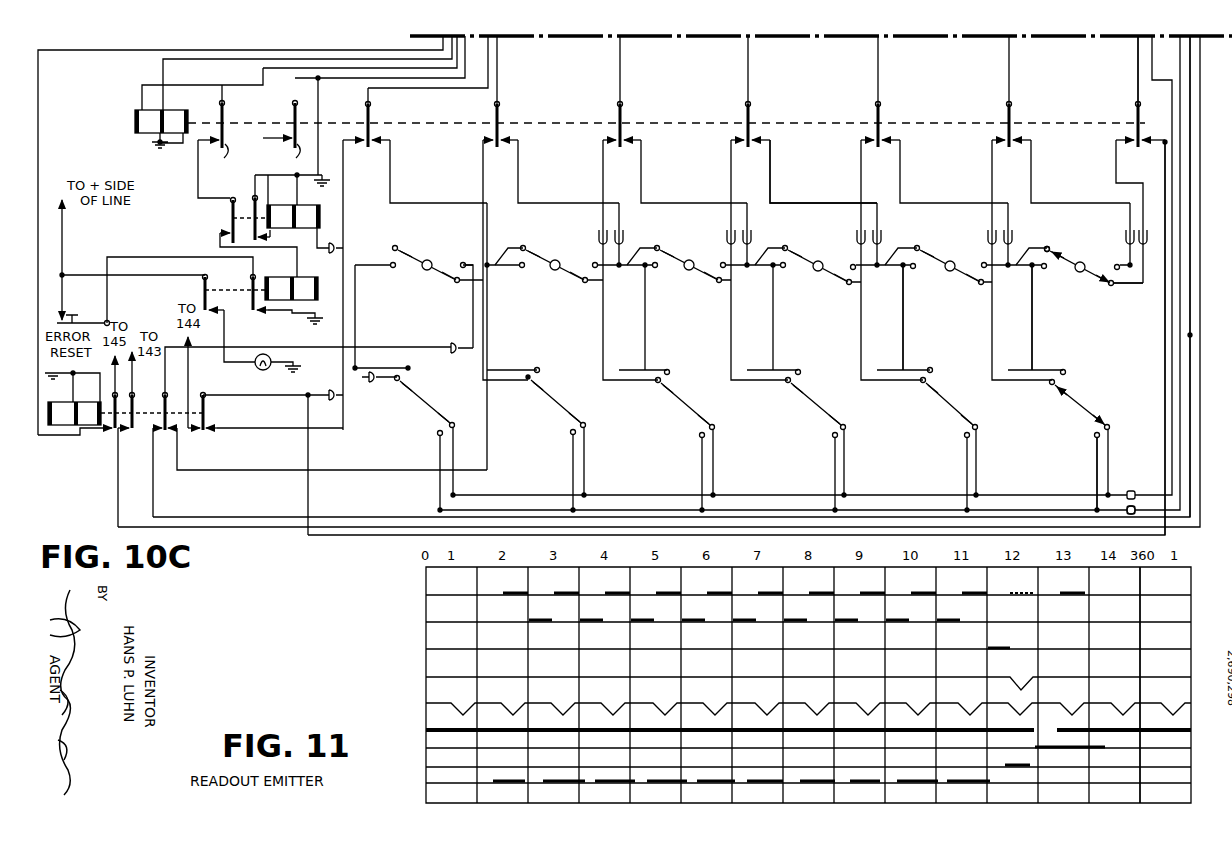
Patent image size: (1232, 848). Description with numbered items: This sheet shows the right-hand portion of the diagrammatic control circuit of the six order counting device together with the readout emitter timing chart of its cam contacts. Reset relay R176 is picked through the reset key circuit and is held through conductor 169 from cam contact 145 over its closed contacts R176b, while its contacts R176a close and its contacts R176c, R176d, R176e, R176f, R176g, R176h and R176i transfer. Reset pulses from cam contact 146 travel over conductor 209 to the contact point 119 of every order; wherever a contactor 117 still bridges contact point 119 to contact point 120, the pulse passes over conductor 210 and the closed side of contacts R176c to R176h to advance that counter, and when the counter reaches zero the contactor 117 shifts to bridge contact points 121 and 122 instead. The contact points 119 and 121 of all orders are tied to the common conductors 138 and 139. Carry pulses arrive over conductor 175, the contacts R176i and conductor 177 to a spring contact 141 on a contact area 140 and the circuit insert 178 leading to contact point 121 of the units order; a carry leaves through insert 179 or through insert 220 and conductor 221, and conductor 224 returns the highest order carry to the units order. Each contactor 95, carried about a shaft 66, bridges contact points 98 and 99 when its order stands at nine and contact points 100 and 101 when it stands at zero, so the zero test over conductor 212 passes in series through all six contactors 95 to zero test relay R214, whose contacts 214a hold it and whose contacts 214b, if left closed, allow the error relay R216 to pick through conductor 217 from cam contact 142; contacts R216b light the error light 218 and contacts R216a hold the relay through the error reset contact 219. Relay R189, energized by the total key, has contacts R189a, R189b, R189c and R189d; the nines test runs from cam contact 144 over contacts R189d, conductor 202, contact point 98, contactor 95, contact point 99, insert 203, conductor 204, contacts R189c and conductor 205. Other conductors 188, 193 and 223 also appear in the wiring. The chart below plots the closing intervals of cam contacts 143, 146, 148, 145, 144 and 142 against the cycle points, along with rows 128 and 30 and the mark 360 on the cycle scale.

In FIG. 10C, the line from positive side 188 is at (136, 62).
In FIG. 10C, the conductor 217 is at (230, 62).
In FIG. 10C, the conductor 169 is at (343, 79).
In FIG. 10C, the reset relay R176 is at (146, 134).
In FIG. 10C, the normally open contacts of reset relay R176a is at (222, 141).
In FIG. 10C, the normally open contacts of reset relay R176b is at (287, 132).
In FIG. 10C, the transfer contacts of reset relay R176c is at (371, 118).
In FIG. 10C, the transfer contacts of reset relay R176d is at (500, 118).
In FIG. 10C, the transfer contacts of reset relay R176e is at (623, 118).
In FIG. 10C, the transfer contacts of reset relay R176f is at (751, 118).
In FIG. 10C, the transfer contacts of reset relay R176g is at (881, 118).
In FIG. 10C, the transfer contacts of reset relay R176h is at (1012, 118).
In FIG. 10C, the transfer contacts of reset relay R176i is at (1136, 110).
In FIG. 10C, the normally open contacts of zero test relay 214a is at (250, 205).
In FIG. 10C, the normally closed contacts of zero test relay 214b is at (228, 224).
In FIG. 10C, the zero test relay R214 is at (302, 210).
In FIG. 10C, the conductor 210 is at (344, 218).
In FIG. 10C, the normally open contacts of error relay R216a is at (255, 312).
In FIG. 10C, the normally open contacts of error relay R216b is at (210, 277).
In FIG. 10C, the error relay R216 is at (296, 280).
In FIG. 10C, the error reset contact 219 is at (96, 318).
In FIG. 10C, the error light 218 is at (262, 372).
In FIG. 10C, the relay R189 is at (86, 436).
In FIG. 10C, the relay contact R189a is at (114, 440).
In FIG. 10C, the relay contact R189b is at (128, 440).
In FIG. 10C, the normally open contacts of relay R189 R189c is at (180, 433).
In FIG. 10C, the normally open contacts of relay R189 R189d is at (210, 398).
In FIG. 10C, the conductor 202 is at (290, 397).
In FIG. 10C, the conductor insert 203 is at (472, 316).
In FIG. 10C, the conductor 204 is at (386, 347).
In FIG. 10C, the conductor 205 is at (248, 517).
In FIG. 10C, the line 193 is at (246, 527).
In FIG. 10C, the conductor 224 is at (345, 538).
In FIG. 10C, the line 223 is at (356, 304).
In FIG. 10C, the conductive circuit insert 220 is at (903, 320).
In FIG. 10C, the conductor 221 is at (818, 203).
In FIG. 10C, the conductor 175 is at (1136, 78).
In FIG. 10C, the conductor 209 is at (1172, 132).
In FIG. 10C, the conductor 212 is at (1129, 211).
In FIG. 10C, the conductor 177 is at (1190, 335).
In FIG. 10C, the conductive circuit insert 178 is at (1096, 466).
In FIG. 10C, the conductive circuit insert 179 is at (1032, 338).
In FIG. 10C, the common circuit conductor 138 is at (626, 496).
In FIG. 10C, the common conductor 139 is at (440, 510).
In FIG. 10C, the contact areas 140 is at (455, 351).
In FIG. 10C, the spring contacts 141 is at (880, 230).
In FIG. 10C, the spring contactor 95 is at (428, 264).
In FIG. 10C, the contact point 98 is at (706, 277).
In FIG. 10C, the contact point 99 is at (794, 255).
In FIG. 10C, the shaft 66 is at (950, 255).
In FIG. 10C, the contact point 100 is at (1049, 248).
In FIG. 10C, the contact point 101 is at (1114, 285).
In FIG. 10C, the contact point 122 is at (408, 369).
In FIG. 10C, the contact point 120 is at (398, 382).
In FIG. 10C, the contactor 117 is at (938, 400).
In FIG. 10C, the contact point 119 is at (455, 427).
In FIG. 10C, the contact point 121 is at (437, 434).
In FIG. 11, the cam contact 143 is at (736, 584).
In FIG. 11, the cam contact 146 is at (674, 612).
In FIG. 11, the cam contact 148 is at (699, 639).
In FIG. 11, the readout emitter row 128 is at (789, 674).
In FIG. 11, the readout emitter row 30 is at (793, 700).
In FIG. 11, the cam contact 145 is at (789, 720).
In FIG. 11, the cam contact 144 is at (746, 738).
In FIG. 11, the cam contact 142 is at (709, 756).
In FIG. 11, the cycle point 360 is at (1142, 675).